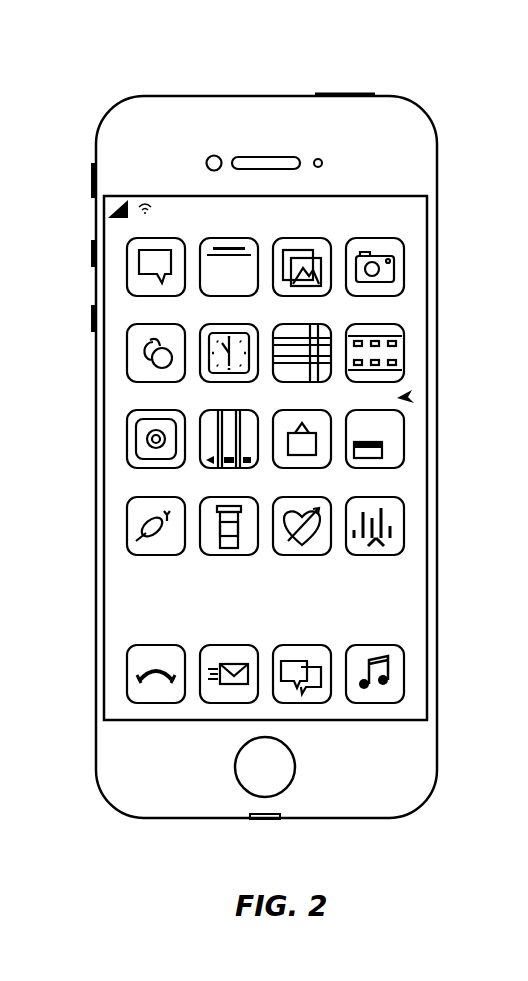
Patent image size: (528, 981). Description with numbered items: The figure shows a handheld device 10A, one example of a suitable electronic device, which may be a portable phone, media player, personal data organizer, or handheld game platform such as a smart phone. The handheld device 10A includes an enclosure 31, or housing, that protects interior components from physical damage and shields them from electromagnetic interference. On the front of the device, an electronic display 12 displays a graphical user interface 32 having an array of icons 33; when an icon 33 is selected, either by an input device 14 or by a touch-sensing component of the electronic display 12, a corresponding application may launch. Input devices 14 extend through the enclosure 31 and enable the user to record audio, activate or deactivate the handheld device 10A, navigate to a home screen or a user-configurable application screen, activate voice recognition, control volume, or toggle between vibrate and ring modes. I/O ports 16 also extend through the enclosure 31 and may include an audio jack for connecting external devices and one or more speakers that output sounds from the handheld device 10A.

The handheld device 10A is at (85, 80).
The electronic display 12 is at (428, 508).
The input devices 14 is at (345, 93).
The I/O ports 16 is at (163, 819).
The enclosure 31 is at (437, 460).
The graphical user interface 32 is at (408, 394).
The icons 33 is at (305, 556).